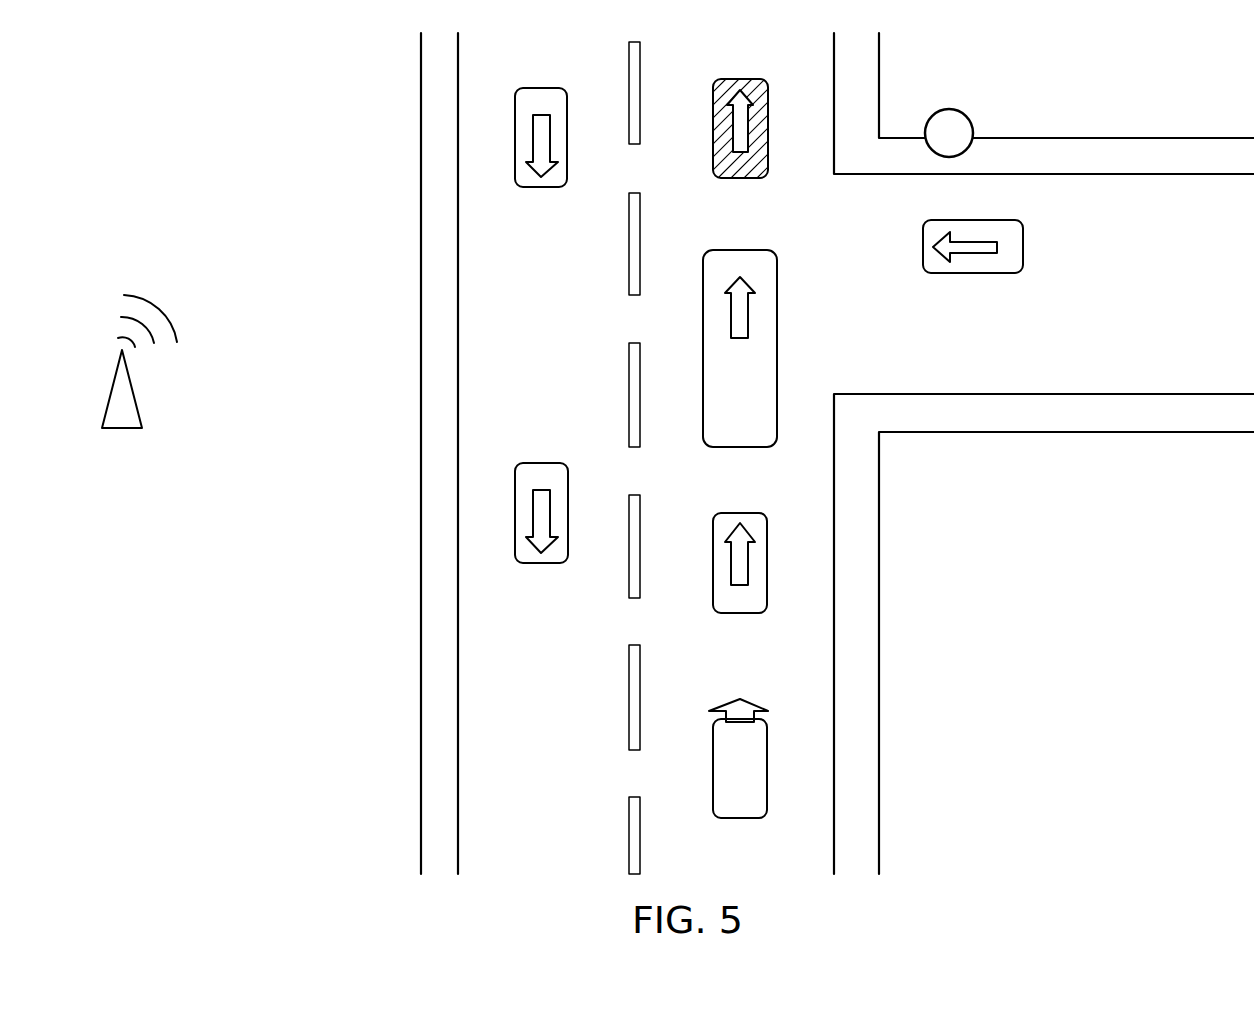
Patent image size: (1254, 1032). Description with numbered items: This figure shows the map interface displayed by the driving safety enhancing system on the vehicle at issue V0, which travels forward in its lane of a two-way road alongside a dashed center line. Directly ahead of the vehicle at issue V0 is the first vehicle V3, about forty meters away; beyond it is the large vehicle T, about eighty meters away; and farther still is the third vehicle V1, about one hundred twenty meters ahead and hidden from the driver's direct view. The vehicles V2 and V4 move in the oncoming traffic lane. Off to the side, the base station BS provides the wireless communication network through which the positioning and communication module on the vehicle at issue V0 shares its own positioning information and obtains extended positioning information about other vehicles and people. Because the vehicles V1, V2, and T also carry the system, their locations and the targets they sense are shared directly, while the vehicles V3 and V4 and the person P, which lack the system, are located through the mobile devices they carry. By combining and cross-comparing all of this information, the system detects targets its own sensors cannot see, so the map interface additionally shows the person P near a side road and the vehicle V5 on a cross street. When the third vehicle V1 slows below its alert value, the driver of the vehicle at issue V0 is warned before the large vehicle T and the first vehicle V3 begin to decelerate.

The vehicle at issue V0 is at (762, 807).
The third vehicle V1 is at (751, 86).
The vehicle V2 is at (541, 97).
The first vehicle V3 is at (747, 598).
The vehicle V4 is at (541, 472).
The vehicle V5 is at (1023, 247).
The large vehicle T is at (777, 340).
The person P is at (949, 108).
The base station BS is at (142, 412).